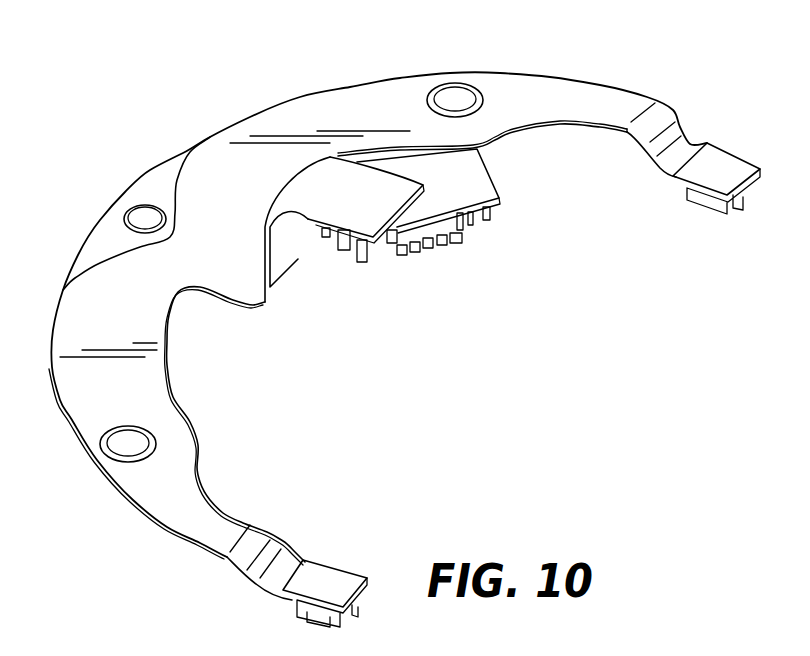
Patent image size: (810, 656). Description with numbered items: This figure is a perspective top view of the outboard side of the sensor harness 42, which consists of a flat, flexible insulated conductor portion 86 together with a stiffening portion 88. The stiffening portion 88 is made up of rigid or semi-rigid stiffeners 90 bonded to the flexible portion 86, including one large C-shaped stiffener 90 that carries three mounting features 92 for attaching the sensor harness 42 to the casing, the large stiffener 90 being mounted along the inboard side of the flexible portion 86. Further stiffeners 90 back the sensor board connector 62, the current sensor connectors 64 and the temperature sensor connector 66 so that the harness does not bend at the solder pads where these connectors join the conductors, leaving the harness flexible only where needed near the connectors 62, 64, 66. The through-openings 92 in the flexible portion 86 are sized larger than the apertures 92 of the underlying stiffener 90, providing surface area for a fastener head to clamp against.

The sensor harness 42 is at (109, 107).
The sensor board connector 62 is at (358, 258).
The current sensor connector 64 is at (703, 198).
The temperature sensor connector 66 is at (442, 247).
The insulated conductor portion 86 is at (343, 374).
The stiffening portion 88 is at (164, 168).
The stiffener 90 is at (280, 278).
The mounting feature 92 is at (460, 100).